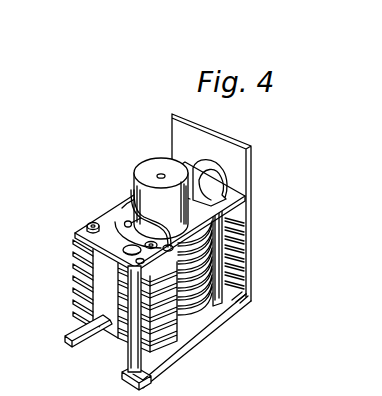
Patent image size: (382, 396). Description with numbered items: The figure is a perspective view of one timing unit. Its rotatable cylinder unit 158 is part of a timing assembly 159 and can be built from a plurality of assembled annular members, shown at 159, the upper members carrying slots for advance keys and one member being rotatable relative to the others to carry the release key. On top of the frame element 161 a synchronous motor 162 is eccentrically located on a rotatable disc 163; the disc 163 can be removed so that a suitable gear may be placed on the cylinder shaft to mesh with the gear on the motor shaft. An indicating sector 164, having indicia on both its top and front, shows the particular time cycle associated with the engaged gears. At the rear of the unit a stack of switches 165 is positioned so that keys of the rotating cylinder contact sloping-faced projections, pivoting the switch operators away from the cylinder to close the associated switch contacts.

The rotatable cylinder unit 158 is at (231, 331).
The timing assembly 159 is at (228, 264).
The frame element 161 is at (108, 211).
The synchronous motor 162 is at (160, 162).
The rotatable disc 163 is at (138, 189).
The indicating sector 164 is at (223, 170).
The stack of switches 165 is at (69, 305).